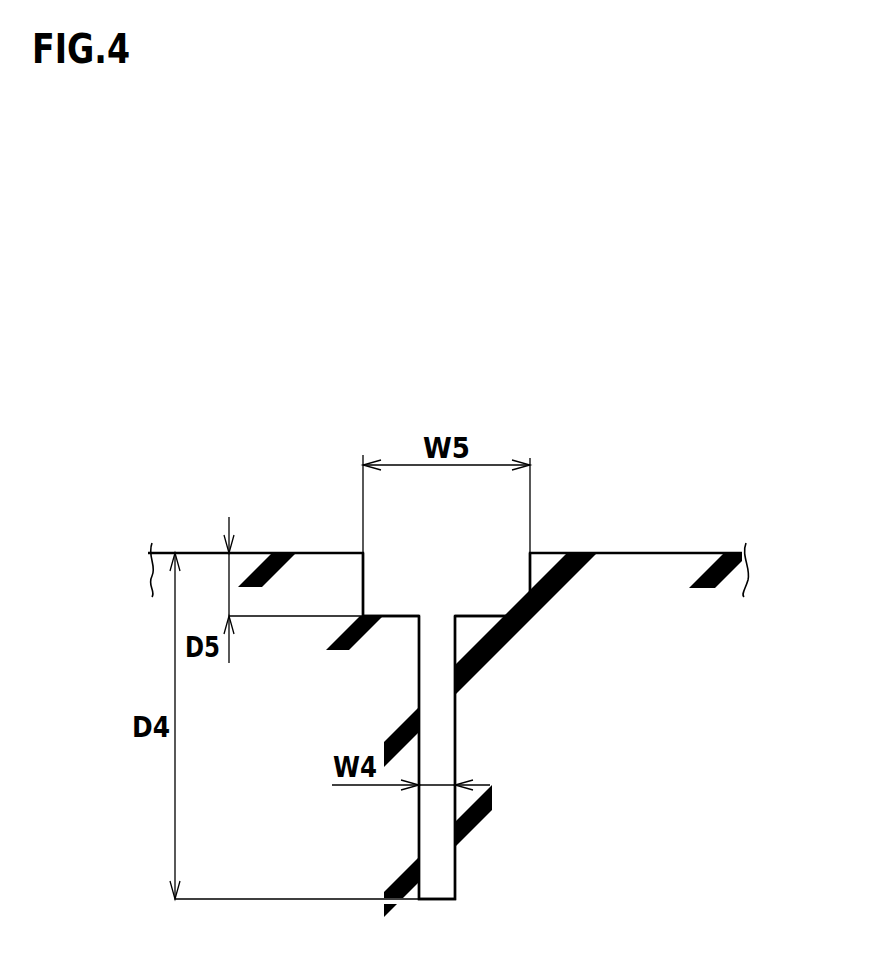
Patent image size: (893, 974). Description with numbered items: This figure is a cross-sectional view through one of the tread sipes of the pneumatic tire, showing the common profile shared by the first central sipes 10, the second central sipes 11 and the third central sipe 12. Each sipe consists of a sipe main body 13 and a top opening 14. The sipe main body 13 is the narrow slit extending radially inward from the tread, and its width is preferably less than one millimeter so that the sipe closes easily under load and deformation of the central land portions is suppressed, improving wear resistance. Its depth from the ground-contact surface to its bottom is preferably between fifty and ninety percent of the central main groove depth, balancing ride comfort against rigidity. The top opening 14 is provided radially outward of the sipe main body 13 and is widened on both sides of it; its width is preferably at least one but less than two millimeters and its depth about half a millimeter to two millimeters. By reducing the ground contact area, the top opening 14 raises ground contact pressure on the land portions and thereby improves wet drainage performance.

The first central sipe 10 is at (448, 583).
The second central sipe 11 is at (448, 583).
The third central sipe 12 is at (527, 358).
The sipe main body 13 is at (438, 727).
The top opening 14 is at (485, 575).